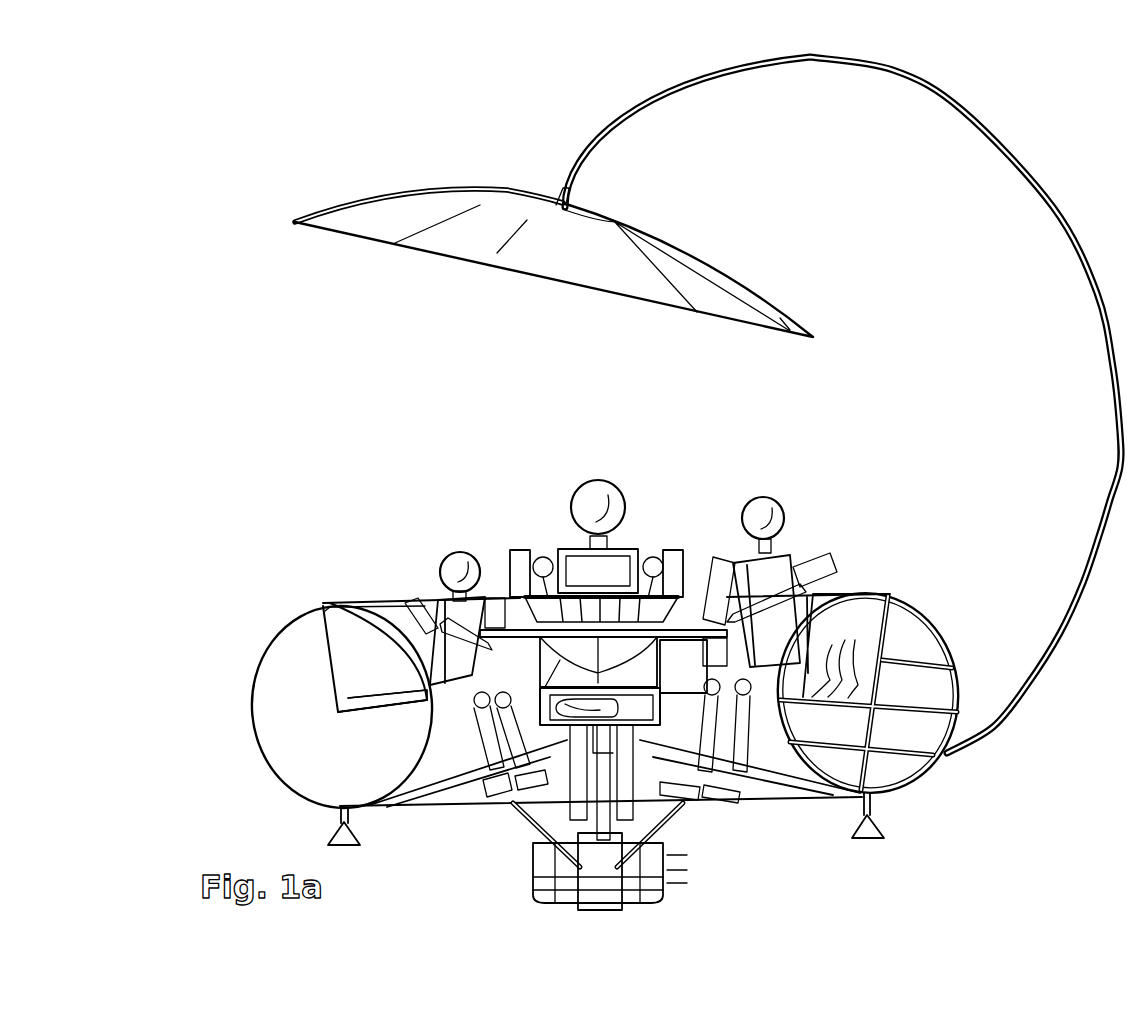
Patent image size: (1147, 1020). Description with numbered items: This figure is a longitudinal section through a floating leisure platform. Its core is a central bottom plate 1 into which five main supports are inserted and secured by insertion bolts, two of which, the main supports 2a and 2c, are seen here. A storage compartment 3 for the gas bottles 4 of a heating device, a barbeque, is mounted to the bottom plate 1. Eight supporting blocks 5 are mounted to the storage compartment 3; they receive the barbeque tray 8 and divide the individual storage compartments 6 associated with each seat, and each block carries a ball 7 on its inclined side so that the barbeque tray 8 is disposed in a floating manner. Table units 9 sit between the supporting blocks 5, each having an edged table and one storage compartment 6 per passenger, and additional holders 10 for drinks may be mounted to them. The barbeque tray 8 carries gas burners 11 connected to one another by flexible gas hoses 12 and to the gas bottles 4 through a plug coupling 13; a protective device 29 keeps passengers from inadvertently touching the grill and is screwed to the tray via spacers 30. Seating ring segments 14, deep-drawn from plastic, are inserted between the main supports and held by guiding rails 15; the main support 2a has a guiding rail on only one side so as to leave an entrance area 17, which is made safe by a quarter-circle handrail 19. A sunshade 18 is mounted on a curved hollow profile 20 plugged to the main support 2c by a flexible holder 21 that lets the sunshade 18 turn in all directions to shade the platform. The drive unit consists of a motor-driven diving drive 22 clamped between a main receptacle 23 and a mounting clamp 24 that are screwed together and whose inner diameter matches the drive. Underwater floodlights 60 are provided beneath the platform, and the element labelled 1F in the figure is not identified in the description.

The bottom plate 1 is at (667, 818).
The heating flames 1F is at (845, 640).
The main support 2a is at (285, 648).
The main support 2c is at (830, 796).
The storage compartment 3 is at (683, 666).
The gas bottles 4 is at (645, 713).
The supporting blocks 5 is at (455, 688).
The storage compartments 6 is at (455, 688).
The ball 7 is at (545, 657).
The barbeque tray 8 is at (546, 558).
The table units 9 is at (700, 603).
The holders 10 is at (730, 650).
The gas burners 11 is at (633, 570).
The flexible gas hoses 12 is at (567, 557).
The plug coupling 13 is at (478, 737).
The seating ring segments 14 is at (392, 600).
The guiding rails 15 is at (930, 662).
The entrance area 17 is at (318, 765).
The sunshade 18 is at (370, 223).
The handrail 19 is at (337, 603).
The curved hollow profile 20 is at (1052, 207).
The flexible holder 21 is at (557, 200).
The diving drive 22 is at (543, 863).
The main receptacle 23 is at (540, 823).
The mounting clamp 24 is at (593, 880).
The protective device 29 is at (628, 555).
The spacers 30 is at (697, 597).
The underwater floodlights 60 is at (355, 838).